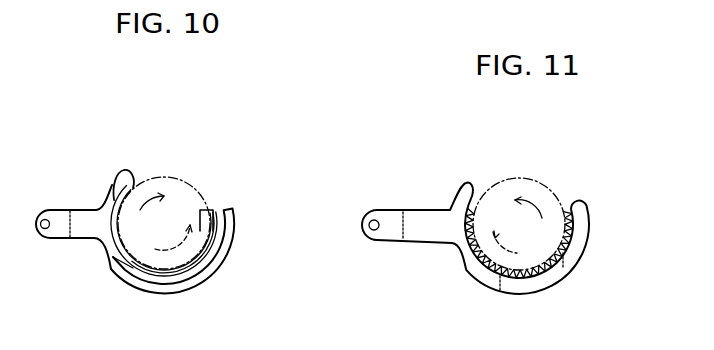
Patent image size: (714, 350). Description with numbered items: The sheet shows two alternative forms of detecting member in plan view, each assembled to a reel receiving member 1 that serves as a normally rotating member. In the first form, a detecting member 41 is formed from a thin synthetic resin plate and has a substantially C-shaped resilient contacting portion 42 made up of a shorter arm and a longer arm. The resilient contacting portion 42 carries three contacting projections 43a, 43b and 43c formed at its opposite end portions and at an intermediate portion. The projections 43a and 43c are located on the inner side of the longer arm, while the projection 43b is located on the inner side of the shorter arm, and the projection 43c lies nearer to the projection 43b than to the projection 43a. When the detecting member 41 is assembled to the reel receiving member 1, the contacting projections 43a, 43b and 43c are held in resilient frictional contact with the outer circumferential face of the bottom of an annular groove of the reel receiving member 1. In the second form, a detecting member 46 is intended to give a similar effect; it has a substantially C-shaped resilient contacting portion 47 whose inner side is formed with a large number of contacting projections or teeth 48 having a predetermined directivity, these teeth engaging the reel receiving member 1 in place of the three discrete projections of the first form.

In FIG. 10, the reel receiving member 1 is at (188, 183).
In FIG. 11, the reel receiving member 1 is at (541, 181).
In FIG. 10, the detecting member 41 is at (68, 210).
In FIG. 10, the resilient contacting portion 42 is at (220, 270).
In FIG. 10, the contacting projection 43a is at (221, 208).
In FIG. 10, the contacting projection 43b is at (131, 178).
In FIG. 10, the contacting projection 43c is at (127, 258).
In FIG. 11, the detecting member 46 is at (422, 210).
In FIG. 11, the resilient contacting portion 47 is at (587, 229).
In FIG. 11, the contacting projections or teeth 48 is at (562, 240).